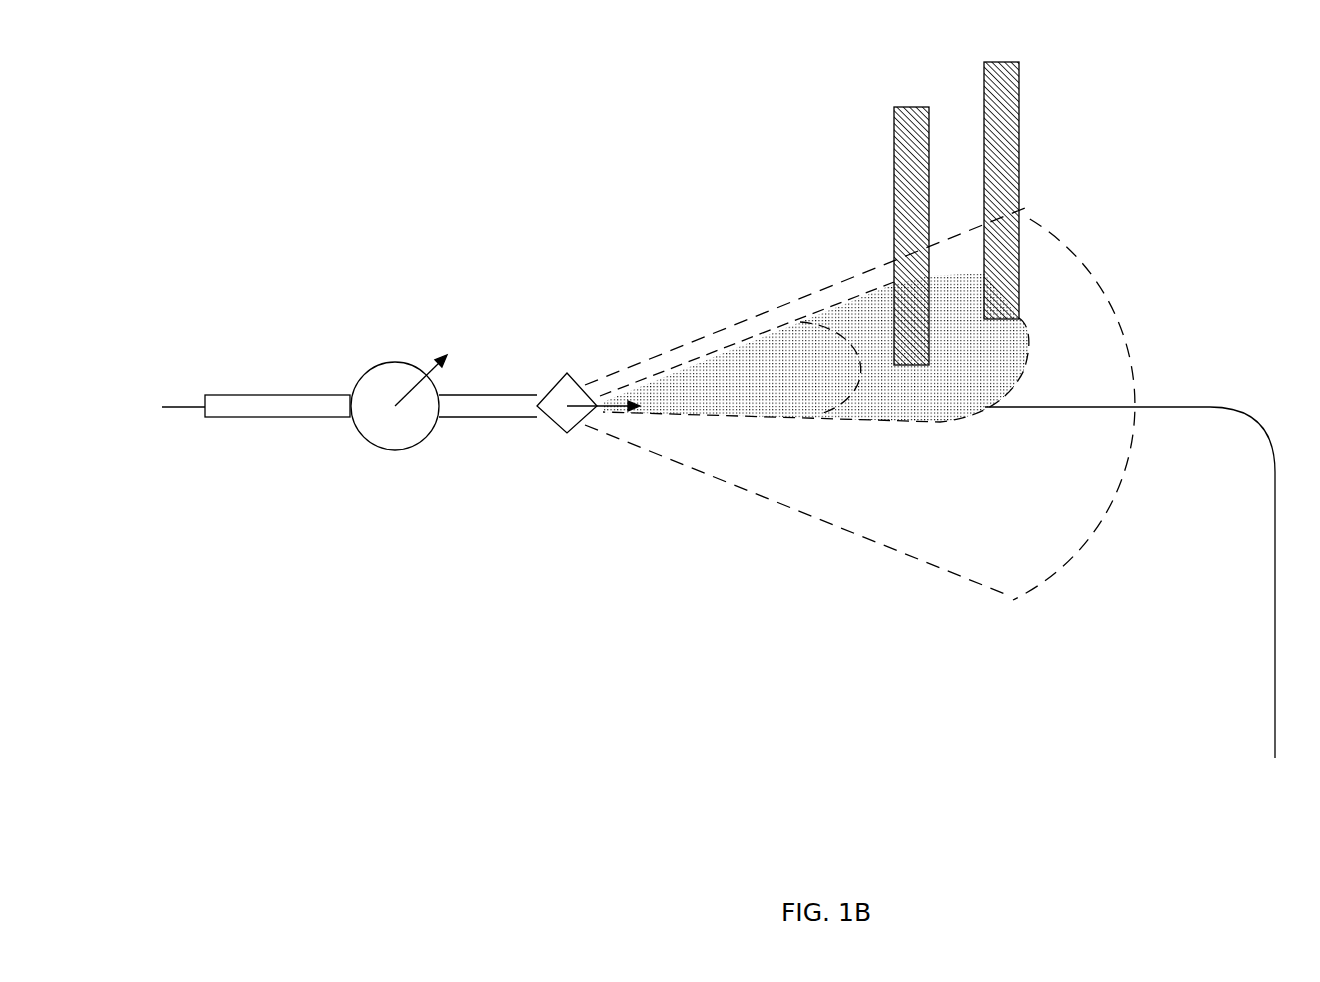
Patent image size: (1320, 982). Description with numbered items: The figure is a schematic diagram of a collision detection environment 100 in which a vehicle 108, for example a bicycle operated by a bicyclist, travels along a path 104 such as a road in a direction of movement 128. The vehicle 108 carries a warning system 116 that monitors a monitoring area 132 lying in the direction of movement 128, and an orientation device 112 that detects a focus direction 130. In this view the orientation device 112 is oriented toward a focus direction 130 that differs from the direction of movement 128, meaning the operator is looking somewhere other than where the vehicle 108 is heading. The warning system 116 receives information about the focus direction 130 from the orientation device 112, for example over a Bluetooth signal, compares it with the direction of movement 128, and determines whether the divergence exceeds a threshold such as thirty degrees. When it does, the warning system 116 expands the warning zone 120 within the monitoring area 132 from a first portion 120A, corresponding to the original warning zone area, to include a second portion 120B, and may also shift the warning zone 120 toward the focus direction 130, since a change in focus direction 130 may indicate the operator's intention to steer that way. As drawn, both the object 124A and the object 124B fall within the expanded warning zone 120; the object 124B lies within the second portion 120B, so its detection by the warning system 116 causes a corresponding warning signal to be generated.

The collision detection environment 100 is at (275, 133).
The path 104 is at (170, 407).
The vehicle 108 is at (240, 417).
The orientation device 112 is at (395, 452).
The warning system 116 is at (567, 373).
The warning zone 120 is at (875, 405).
The first portion of the warning zone 120A is at (802, 367).
The second portion of the warning zone 120B is at (814, 347).
The object 124A is at (895, 197).
The object 124B is at (1020, 185).
The direction of movement 128 is at (630, 410).
The focus direction 130 is at (437, 350).
The monitoring area 132 is at (1012, 593).